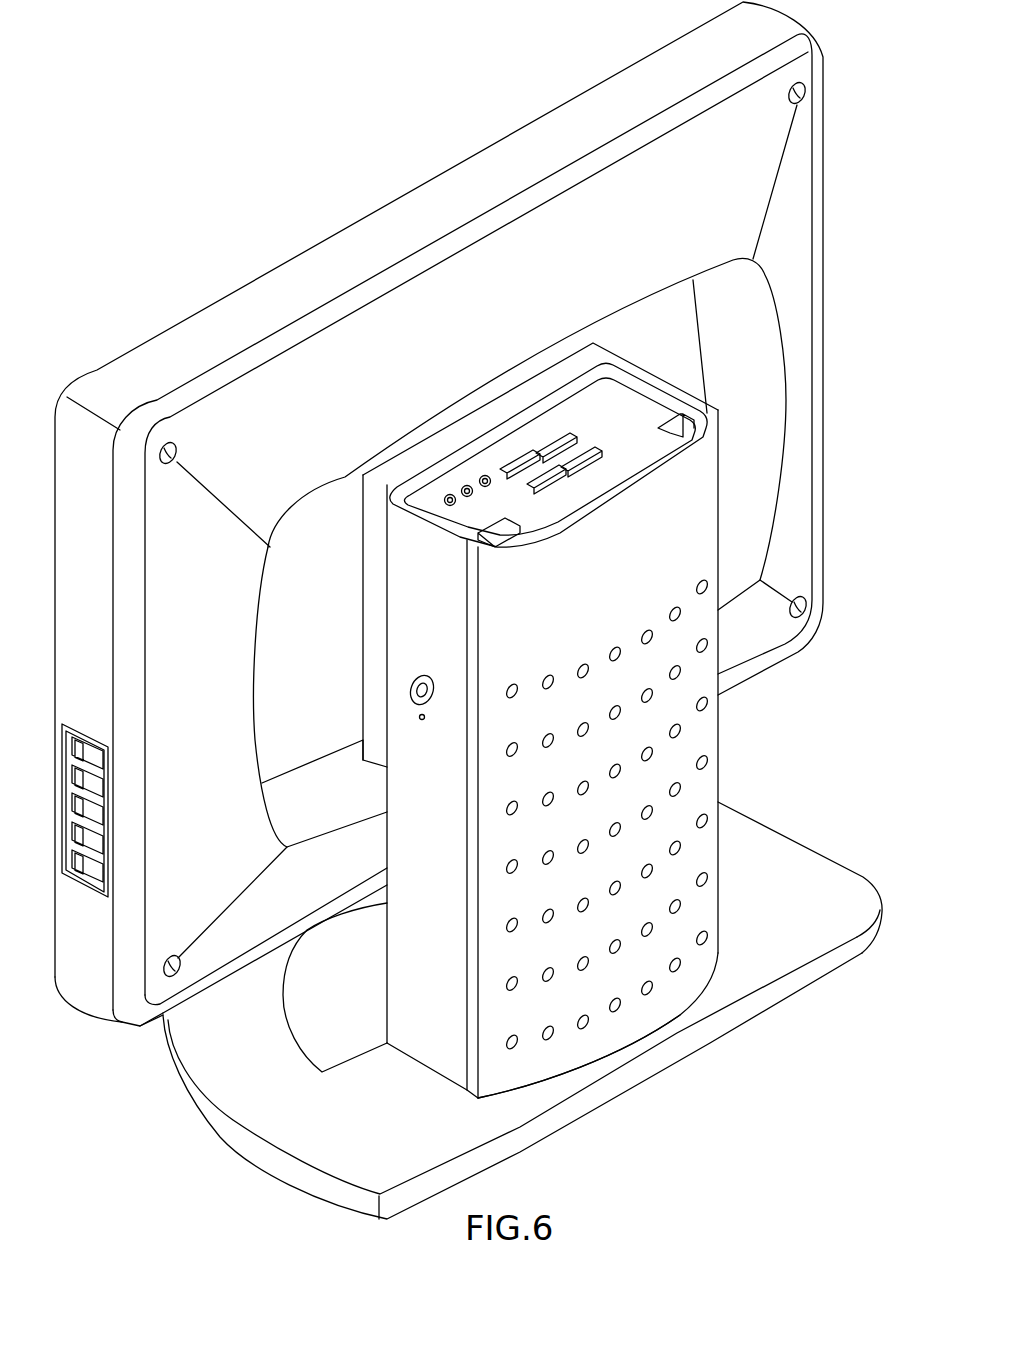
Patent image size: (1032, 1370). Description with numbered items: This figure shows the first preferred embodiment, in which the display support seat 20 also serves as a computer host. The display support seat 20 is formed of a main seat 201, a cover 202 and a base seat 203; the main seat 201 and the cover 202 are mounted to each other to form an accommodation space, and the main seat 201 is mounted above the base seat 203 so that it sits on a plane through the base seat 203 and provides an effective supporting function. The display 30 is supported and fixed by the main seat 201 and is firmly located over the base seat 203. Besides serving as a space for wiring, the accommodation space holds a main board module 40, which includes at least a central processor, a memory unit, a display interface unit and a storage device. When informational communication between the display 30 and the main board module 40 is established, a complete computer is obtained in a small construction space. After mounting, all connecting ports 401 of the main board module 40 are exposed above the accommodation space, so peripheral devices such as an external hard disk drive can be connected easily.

The display support seat 20 is at (800, 817).
The main seat 201 is at (405, 569).
The cover 202 is at (633, 1028).
The base seat 203 is at (310, 1140).
The display 30 is at (371, 244).
The main board module 40 is at (620, 413).
The connecting ports 401 is at (590, 452).